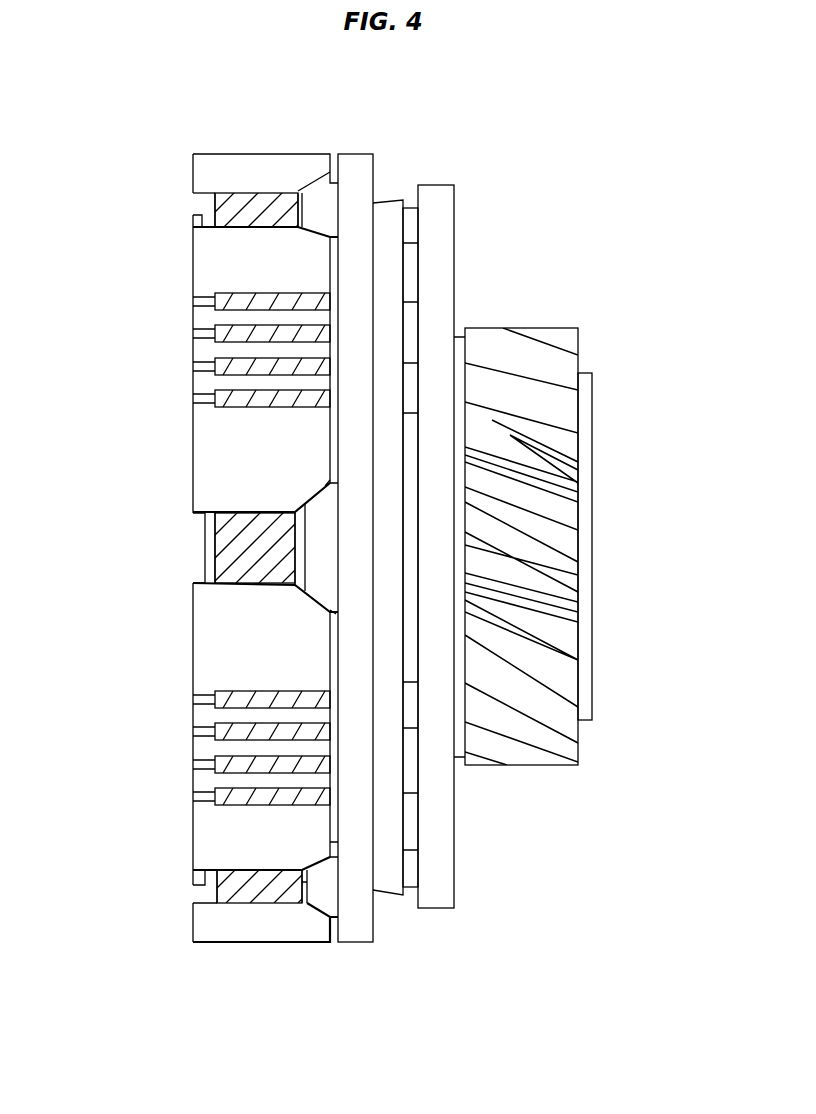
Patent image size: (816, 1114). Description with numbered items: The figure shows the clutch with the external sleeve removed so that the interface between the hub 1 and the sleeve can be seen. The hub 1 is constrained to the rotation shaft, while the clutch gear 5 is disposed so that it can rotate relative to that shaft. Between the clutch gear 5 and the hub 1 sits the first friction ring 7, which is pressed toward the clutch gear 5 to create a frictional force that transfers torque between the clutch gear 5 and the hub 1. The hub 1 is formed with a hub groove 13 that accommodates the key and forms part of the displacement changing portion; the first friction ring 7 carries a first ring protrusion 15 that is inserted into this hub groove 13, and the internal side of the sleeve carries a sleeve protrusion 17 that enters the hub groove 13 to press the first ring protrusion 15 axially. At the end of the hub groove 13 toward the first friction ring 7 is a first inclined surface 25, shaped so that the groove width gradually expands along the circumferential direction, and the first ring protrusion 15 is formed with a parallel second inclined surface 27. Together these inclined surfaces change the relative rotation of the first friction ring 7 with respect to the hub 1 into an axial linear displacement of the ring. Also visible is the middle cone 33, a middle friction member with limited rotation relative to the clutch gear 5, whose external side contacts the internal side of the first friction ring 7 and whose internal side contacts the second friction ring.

The hub 1 is at (212, 442).
The clutch gear 5 is at (550, 665).
The first friction ring 7 is at (357, 163).
The hub groove 13 is at (200, 220).
The first ring protrusion 15 is at (323, 208).
The sleeve protrusion 17 is at (245, 198).
The first inclined surface 25 is at (323, 612).
The second inclined surface 27 is at (318, 485).
The middle cone 33 is at (393, 823).